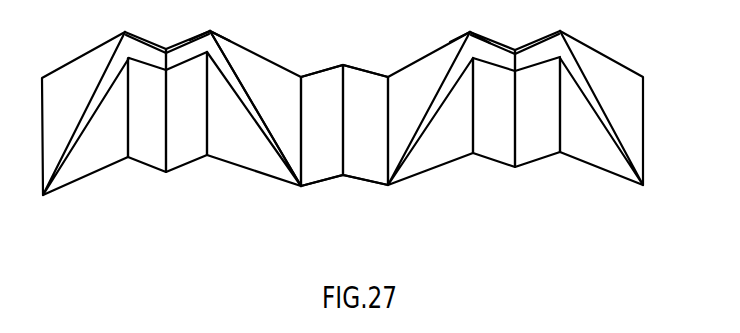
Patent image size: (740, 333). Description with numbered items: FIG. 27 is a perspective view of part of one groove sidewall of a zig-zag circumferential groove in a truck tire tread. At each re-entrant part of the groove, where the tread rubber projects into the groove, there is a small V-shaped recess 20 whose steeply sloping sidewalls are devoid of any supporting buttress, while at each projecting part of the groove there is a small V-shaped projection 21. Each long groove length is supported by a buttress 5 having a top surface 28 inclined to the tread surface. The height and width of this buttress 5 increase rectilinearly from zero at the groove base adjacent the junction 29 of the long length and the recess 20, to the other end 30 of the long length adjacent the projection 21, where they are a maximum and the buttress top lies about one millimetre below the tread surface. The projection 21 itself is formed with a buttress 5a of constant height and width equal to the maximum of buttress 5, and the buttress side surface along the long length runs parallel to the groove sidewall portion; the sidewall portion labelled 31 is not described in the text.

The buttress 5 is at (113, 115).
The buttress 5a is at (155, 143).
The recess 20 is at (352, 187).
The projection 21 is at (167, 44).
The top surface 28 is at (225, 68).
The junction 29 is at (304, 141).
The other end 30 is at (211, 31).
The end panel 31 is at (262, 148).